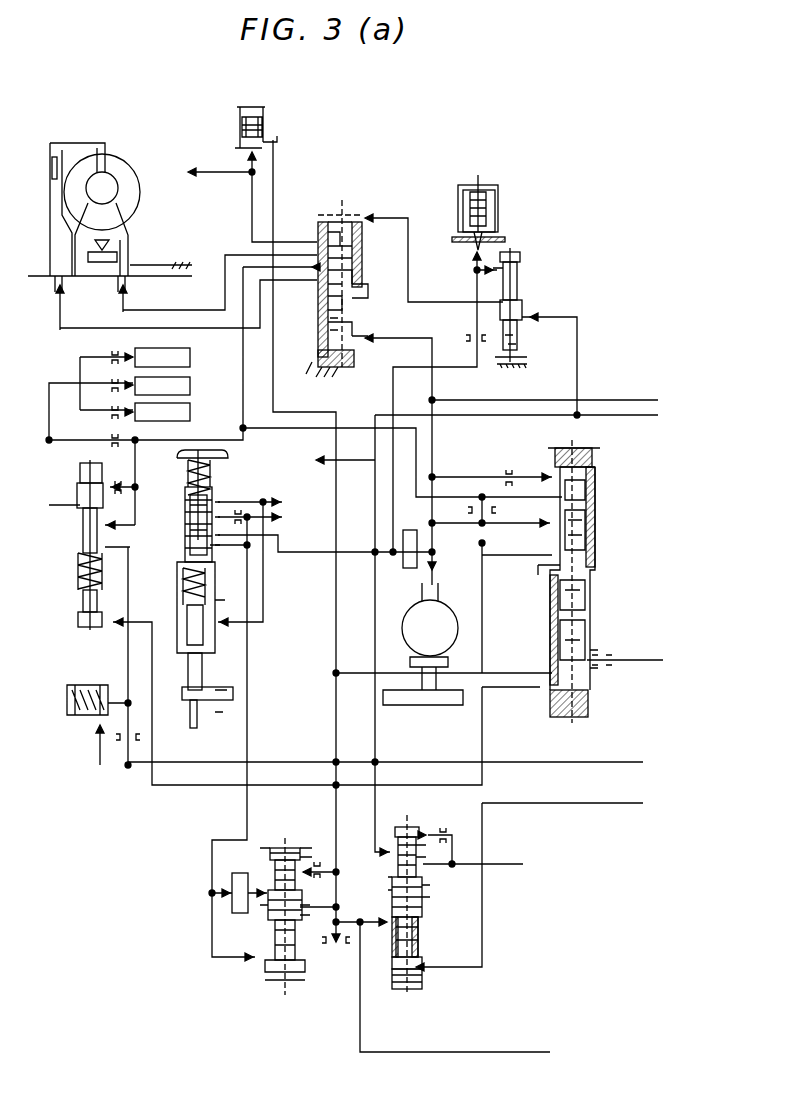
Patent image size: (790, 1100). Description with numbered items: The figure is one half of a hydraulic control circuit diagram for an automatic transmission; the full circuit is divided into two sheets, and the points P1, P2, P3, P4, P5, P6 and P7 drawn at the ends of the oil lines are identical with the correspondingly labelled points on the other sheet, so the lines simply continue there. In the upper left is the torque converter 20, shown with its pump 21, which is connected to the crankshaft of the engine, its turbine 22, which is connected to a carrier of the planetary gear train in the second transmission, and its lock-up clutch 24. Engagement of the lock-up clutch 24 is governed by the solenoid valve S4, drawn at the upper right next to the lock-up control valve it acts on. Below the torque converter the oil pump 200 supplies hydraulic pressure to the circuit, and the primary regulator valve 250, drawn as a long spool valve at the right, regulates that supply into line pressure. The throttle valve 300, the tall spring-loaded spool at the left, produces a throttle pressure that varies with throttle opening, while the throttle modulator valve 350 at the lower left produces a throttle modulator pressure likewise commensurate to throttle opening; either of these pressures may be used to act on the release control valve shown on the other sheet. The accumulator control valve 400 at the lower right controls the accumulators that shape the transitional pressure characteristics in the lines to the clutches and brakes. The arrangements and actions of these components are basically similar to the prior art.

The torque converter 20 is at (97, 182).
The pump 21 is at (110, 167).
The turbine 22 is at (80, 173).
The lock-up clutch 24 is at (53, 180).
The solenoid valve S4 is at (498, 210).
The oil pump 200 is at (408, 620).
The primary regulator valve 250 is at (540, 633).
The throttle valve 300 is at (167, 590).
The throttle modulator valve 350 is at (252, 965).
The accumulator control valve 400 is at (427, 903).
The point P1 is at (660, 404).
The point P2 is at (660, 440).
The point P3 is at (625, 651).
The point P4 is at (387, 748).
The point P5 is at (532, 875).
The point P6 is at (475, 849).
The point P7 is at (455, 987).